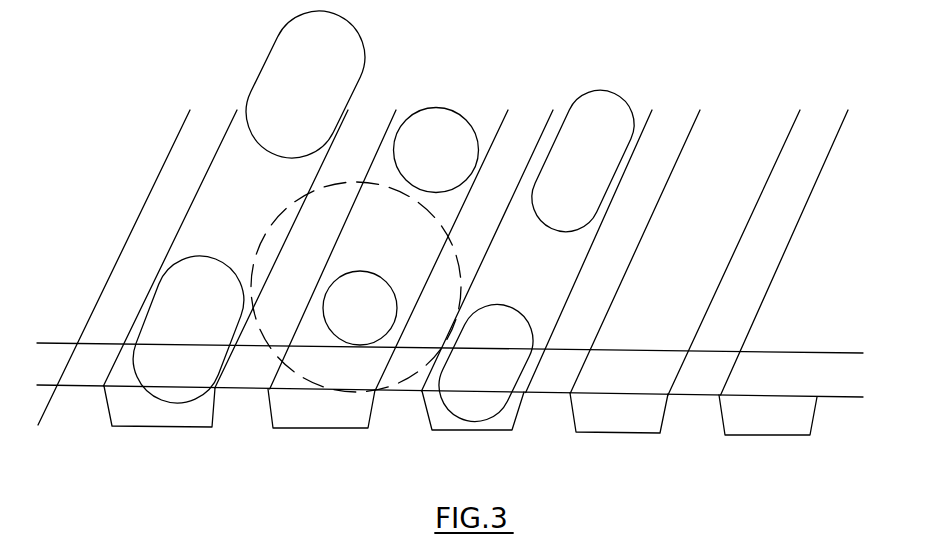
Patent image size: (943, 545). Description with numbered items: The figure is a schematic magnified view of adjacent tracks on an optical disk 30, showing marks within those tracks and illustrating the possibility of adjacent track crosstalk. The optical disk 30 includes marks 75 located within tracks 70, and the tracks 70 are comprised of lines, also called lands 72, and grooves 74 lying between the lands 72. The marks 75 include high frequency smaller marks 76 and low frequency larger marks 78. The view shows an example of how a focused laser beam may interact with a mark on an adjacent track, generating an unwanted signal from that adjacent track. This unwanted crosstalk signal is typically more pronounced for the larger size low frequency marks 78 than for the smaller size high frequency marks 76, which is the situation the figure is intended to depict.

The optical disk 30 is at (768, 72).
The tracks 70 is at (290, 445).
The lines (lands) 72 is at (270, 350).
The grooves 74 is at (285, 176).
The marks 75 is at (578, 116).
The high frequency smaller marks 76 is at (350, 360).
The low frequency larger marks 78 is at (167, 400).